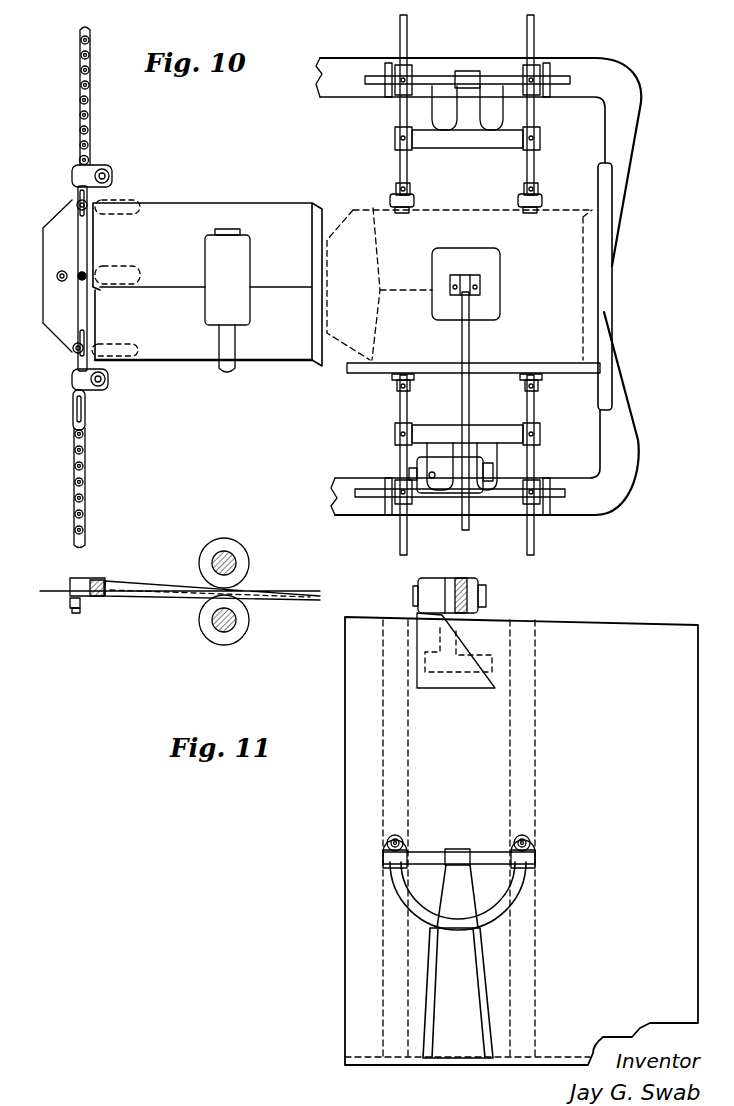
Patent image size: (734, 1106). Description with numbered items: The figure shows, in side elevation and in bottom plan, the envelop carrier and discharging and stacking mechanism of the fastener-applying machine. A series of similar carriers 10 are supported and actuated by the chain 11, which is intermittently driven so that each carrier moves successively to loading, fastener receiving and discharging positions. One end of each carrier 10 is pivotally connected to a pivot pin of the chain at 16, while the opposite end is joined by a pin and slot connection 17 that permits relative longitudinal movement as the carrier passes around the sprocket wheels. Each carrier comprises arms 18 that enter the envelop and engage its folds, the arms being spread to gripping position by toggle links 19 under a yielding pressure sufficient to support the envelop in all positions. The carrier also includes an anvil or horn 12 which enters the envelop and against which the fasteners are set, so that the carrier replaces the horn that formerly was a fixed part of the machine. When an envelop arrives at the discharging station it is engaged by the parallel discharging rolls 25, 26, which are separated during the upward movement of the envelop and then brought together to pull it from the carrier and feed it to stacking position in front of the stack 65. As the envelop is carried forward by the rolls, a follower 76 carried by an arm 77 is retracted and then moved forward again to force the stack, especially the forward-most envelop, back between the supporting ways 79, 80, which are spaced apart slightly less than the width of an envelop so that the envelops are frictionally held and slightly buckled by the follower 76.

In FIG. 10, the carrier 10 is at (72, 378).
In FIG. 10, the chain 11 is at (84, 463).
In FIG. 10, the anvil or horn 12 is at (122, 272).
In FIG. 10, the pivot pin of the chain 16 is at (79, 159).
In FIG. 10, the pin and slot connection 17 is at (85, 393).
In FIG. 10, the arms 18 is at (122, 206).
In FIG. 10, the toggle links 19 is at (82, 243).
In FIG. 10, the discharge roll 25 is at (212, 268).
In FIG. 10, the discharge roll 26 is at (205, 621).
In FIG. 10, the stack of envelops 65 is at (560, 258).
In FIG. 10, the follower 76 is at (482, 262).
In FIG. 10, the arm 77 is at (470, 346).
In FIG. 11, the arm 77 is at (484, 595).
In FIG. 10, the supporting way 79 is at (437, 374).
In FIG. 11, the supporting way 79 is at (521, 841).
In FIG. 10, the supporting way 80 is at (525, 203).
In FIG. 11, the supporting way 80 is at (538, 648).